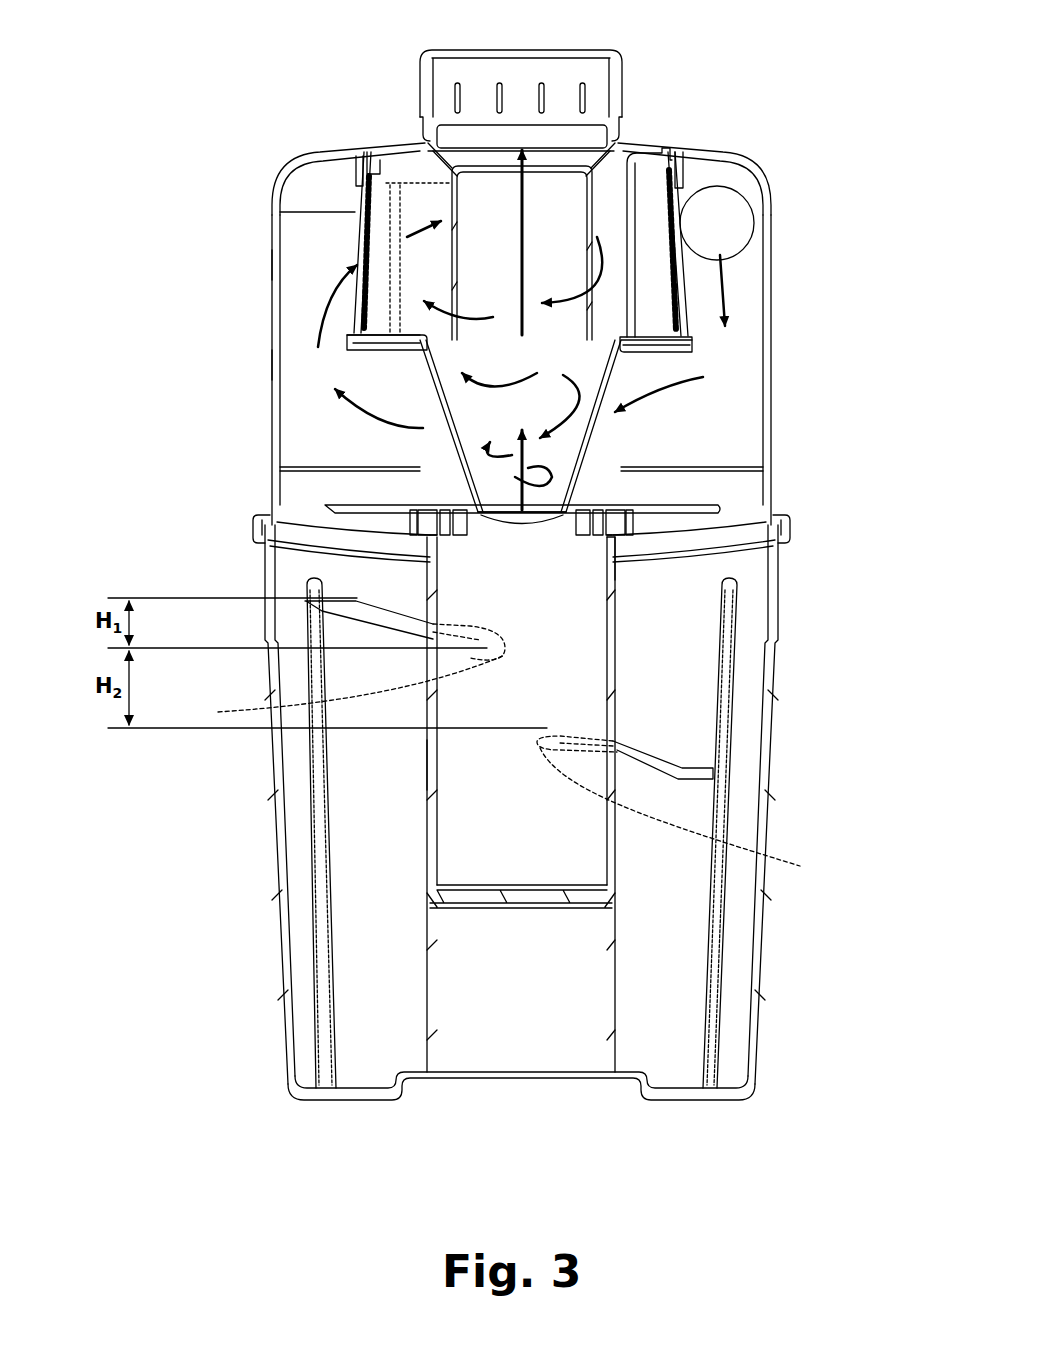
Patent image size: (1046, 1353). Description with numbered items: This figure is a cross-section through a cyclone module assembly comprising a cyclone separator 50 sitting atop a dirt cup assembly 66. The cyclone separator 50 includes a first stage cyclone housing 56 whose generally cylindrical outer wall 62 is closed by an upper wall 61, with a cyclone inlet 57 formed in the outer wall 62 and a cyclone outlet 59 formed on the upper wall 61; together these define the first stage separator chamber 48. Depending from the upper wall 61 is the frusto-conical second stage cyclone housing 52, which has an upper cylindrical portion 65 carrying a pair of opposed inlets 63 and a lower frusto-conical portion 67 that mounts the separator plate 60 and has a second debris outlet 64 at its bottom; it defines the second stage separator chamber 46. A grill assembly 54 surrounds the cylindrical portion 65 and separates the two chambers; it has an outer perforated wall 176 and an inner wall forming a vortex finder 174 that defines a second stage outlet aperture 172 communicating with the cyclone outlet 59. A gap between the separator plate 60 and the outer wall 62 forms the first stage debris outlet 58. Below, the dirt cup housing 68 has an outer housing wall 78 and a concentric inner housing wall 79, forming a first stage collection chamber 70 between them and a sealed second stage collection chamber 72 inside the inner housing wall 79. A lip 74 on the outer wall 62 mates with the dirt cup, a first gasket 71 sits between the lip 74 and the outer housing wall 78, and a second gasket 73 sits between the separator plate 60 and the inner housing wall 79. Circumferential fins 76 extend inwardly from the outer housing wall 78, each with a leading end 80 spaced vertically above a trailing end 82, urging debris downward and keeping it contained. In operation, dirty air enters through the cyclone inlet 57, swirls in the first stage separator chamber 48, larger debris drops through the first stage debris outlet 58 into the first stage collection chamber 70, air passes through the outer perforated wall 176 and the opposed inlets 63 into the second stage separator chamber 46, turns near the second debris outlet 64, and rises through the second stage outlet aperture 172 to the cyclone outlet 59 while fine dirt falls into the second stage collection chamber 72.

The second stage separator chamber 46 is at (502, 420).
The first stage separator chamber 48 is at (319, 383).
The cyclone separator 50 is at (268, 266).
The second stage cyclone housing 52 is at (608, 430).
The grill assembly 54 is at (354, 194).
The first stage cyclone housing 56 is at (275, 304).
The cyclone inlet 57 is at (724, 228).
The first stage debris outlet 58 is at (300, 504).
The cyclone outlet 59 is at (497, 68).
The separator plate 60 is at (303, 553).
The upper wall 61 is at (640, 158).
The outer wall 62 is at (284, 364).
The opposed inlets 63 is at (384, 247).
The second debris outlet 64 is at (610, 562).
The upper cylindrical portion 65 is at (655, 205).
The dirt cup assembly 66 is at (766, 964).
The lower frusto-conical portion 67 is at (432, 410).
The dirt cup housing 68 is at (284, 963).
The first stage collection chamber 70 is at (394, 1003).
The first gasket 71 is at (787, 547).
The second stage collection chamber 72 is at (529, 839).
The second gasket 73 is at (517, 520).
The lip 74 is at (255, 521).
The circumferential fin 76 is at (385, 628).
The outer housing wall 78 is at (290, 880).
The inner housing wall 79 is at (428, 766).
The leading end 80 is at (336, 603).
The trailing end 82 is at (806, 808).
The second stage outlet aperture 172 is at (528, 264).
The vortex finder 174 is at (447, 223).
The outer perforated wall 176 is at (372, 207).